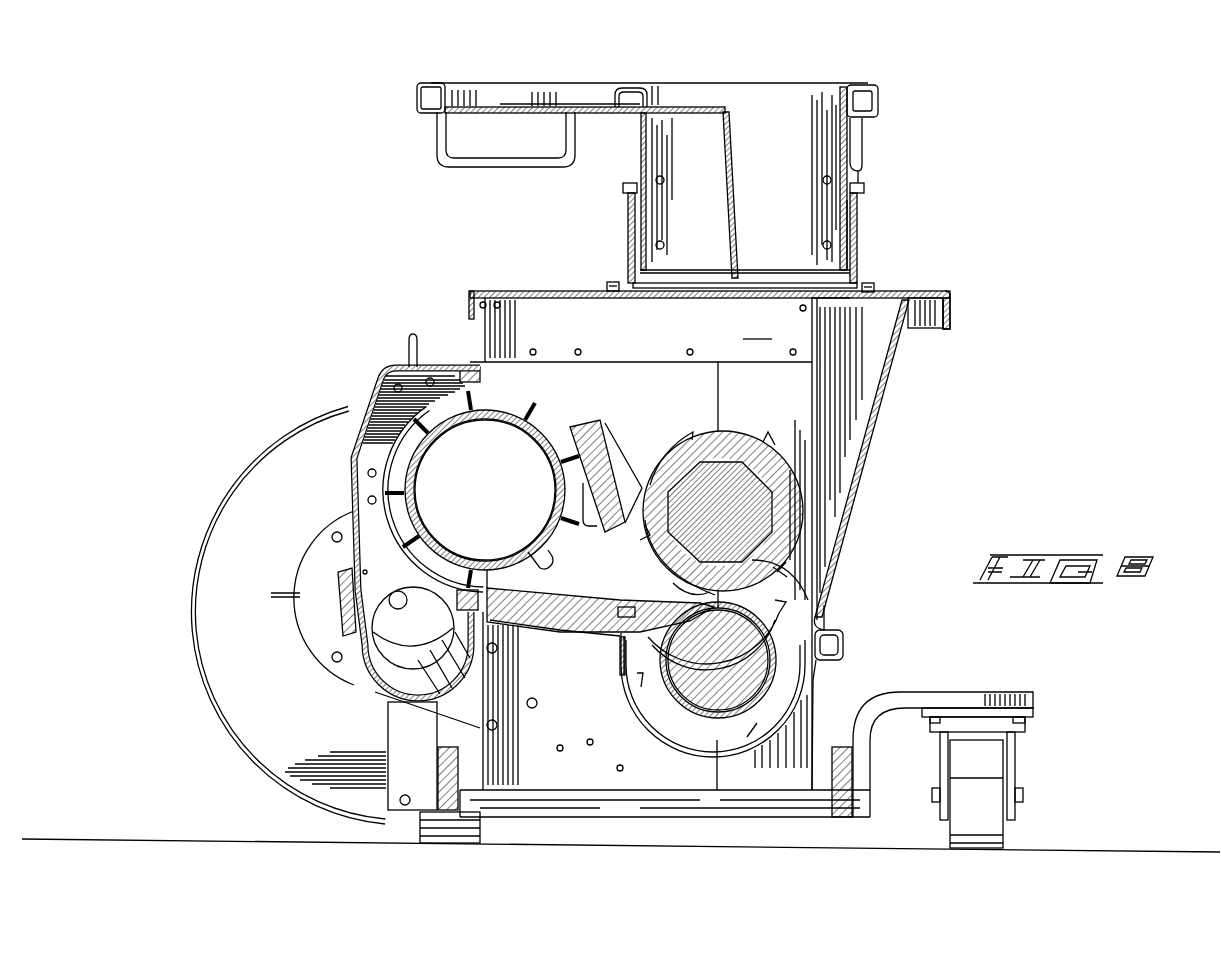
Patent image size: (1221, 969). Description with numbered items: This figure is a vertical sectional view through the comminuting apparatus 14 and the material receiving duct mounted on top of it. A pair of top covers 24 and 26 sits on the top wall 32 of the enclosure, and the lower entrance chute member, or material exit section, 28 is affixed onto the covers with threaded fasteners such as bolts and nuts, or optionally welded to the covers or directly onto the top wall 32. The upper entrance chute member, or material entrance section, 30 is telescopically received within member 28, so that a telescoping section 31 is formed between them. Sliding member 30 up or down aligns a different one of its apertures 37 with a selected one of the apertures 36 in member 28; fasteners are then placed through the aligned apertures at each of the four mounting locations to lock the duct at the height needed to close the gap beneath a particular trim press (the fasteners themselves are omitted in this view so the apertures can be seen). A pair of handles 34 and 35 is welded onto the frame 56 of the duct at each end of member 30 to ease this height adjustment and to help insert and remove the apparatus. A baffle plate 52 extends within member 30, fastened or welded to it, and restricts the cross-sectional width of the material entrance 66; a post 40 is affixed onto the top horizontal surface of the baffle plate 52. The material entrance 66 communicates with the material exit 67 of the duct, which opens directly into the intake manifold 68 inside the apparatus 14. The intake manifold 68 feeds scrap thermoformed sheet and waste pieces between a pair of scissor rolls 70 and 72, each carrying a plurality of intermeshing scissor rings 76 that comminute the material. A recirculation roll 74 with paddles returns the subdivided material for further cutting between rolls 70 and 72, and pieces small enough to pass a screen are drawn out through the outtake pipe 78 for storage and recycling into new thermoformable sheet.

The comminuting apparatus 14 is at (1100, 146).
The top cover 24 is at (531, 290).
The top cover 26 is at (933, 292).
The lower entrance chute member 28 is at (858, 230).
The upper entrance chute member 30 is at (862, 178).
The telescoping section 31 is at (872, 214).
The top wall 32 is at (541, 300).
The handle 34 is at (441, 168).
The handle 35 is at (872, 140).
The apertures 36 is at (670, 278).
The apertures 37 is at (664, 172).
The post 40 is at (626, 87).
The baffle plate 52 is at (738, 128).
The frame 56 is at (879, 92).
The material entrance 66 is at (776, 160).
The material exit 67 is at (836, 305).
The intake manifold 68 is at (665, 557).
The scissor roll 70 is at (705, 422).
The scissor roll 72 is at (632, 712).
The recirculation roll 74 is at (549, 405).
The scissor rings 76 is at (783, 547).
The outtake pipe 78 is at (405, 675).